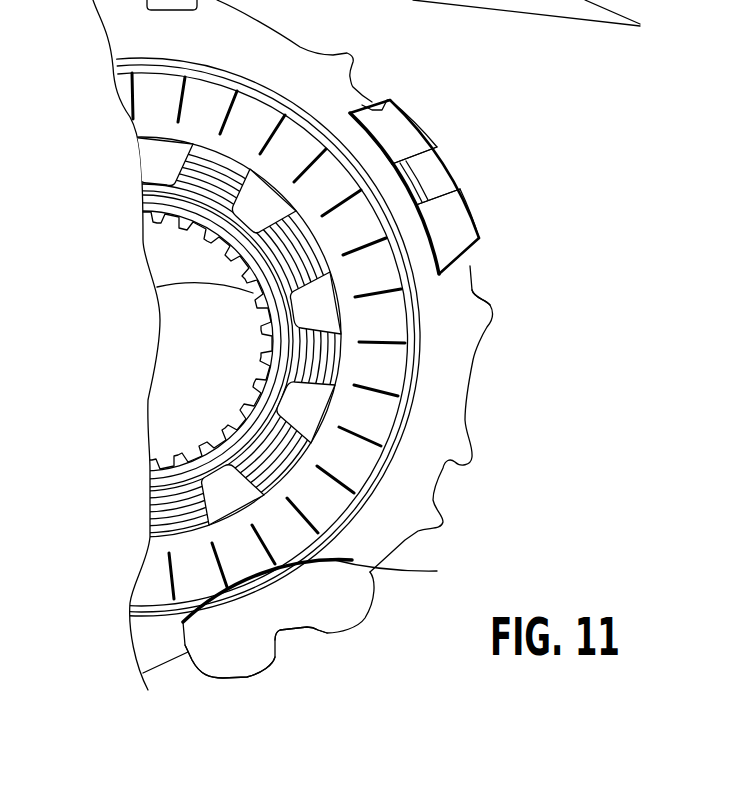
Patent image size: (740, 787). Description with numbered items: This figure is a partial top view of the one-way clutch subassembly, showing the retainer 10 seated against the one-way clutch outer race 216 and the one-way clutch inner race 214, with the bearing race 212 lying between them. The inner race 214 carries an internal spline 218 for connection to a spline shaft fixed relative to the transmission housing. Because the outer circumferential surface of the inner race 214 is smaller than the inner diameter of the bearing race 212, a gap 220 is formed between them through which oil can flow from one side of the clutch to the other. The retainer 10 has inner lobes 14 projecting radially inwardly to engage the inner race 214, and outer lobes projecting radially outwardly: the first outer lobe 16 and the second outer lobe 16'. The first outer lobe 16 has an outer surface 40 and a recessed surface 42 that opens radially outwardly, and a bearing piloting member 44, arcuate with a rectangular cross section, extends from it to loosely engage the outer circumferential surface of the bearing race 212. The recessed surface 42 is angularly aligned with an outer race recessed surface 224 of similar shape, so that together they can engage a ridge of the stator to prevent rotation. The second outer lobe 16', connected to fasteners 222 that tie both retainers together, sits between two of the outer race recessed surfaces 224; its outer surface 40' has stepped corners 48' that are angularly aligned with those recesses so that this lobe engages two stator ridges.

The retainer 10 is at (435, 122).
The inner lobes 14 is at (250, 201).
The first outer lobe 16 is at (300, 619).
The second outer lobe 16' is at (483, 226).
The outer surface 40 is at (236, 674).
The outer surface 40' is at (526, 261).
The recessed surface 42 is at (300, 632).
The bearing piloting member 44 is at (397, 568).
The stepped corners 48' is at (400, 112).
The bearing race 212 is at (108, 98).
The one-way clutch inner race 214 is at (205, 441).
The one-way clutch outer race 216 is at (305, 44).
The internal spline 218 is at (157, 287).
The gap 220 is at (226, 156).
The fasteners 222 is at (432, 173).
The outer race recessed surface 224 is at (363, 98).